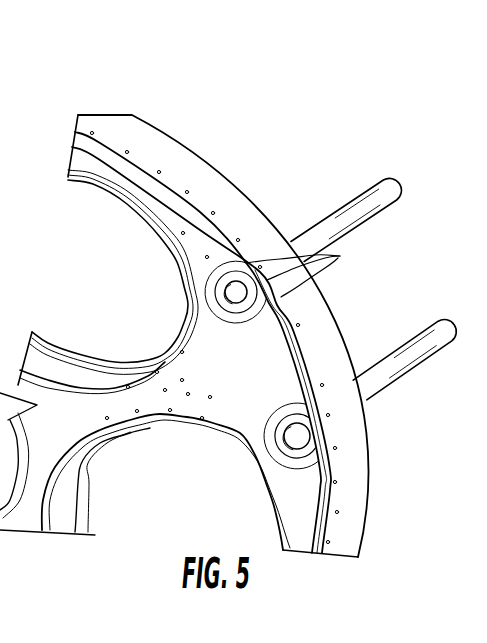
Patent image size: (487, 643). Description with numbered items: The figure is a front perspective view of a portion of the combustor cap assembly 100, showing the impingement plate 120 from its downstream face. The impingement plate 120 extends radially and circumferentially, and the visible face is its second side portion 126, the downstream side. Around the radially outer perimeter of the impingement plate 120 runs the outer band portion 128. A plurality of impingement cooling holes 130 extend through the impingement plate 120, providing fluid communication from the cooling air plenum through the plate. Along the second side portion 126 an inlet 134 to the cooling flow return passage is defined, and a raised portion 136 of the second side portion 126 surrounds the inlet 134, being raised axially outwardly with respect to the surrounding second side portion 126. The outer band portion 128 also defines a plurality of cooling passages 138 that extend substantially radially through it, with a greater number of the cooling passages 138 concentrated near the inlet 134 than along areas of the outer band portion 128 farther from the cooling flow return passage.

The combustor cap assembly 100 is at (303, 90).
The impingement plate 120 is at (202, 358).
The second side portion 126 is at (308, 522).
The outer band portion 128 is at (172, 158).
The impingement cooling holes 130 is at (202, 418).
The inlet 134 is at (303, 438).
The raised portion 136 is at (295, 418).
The cooling passages 138 is at (340, 256).